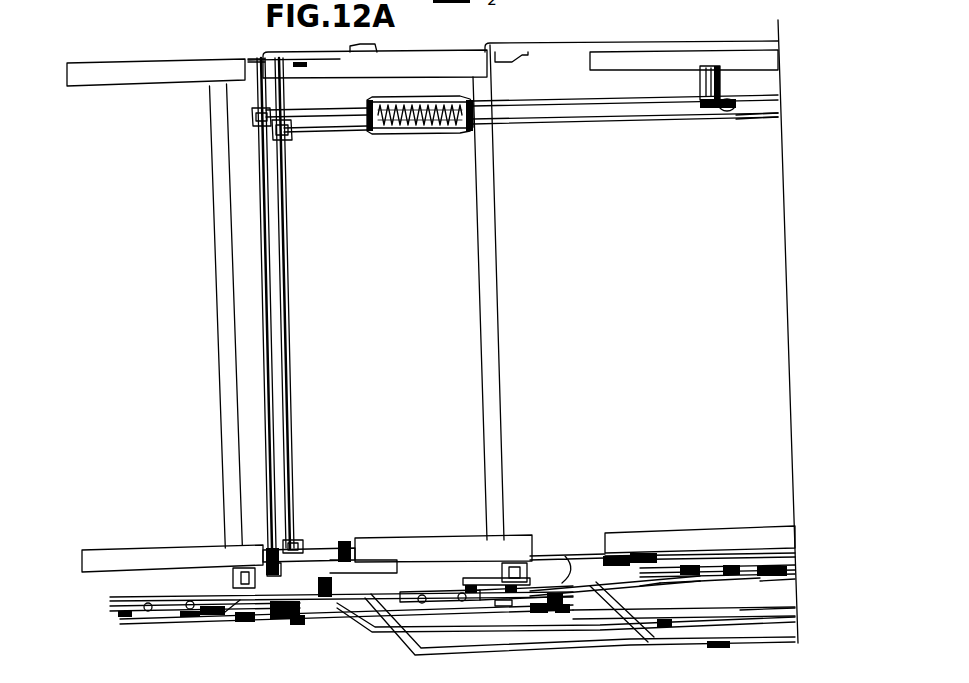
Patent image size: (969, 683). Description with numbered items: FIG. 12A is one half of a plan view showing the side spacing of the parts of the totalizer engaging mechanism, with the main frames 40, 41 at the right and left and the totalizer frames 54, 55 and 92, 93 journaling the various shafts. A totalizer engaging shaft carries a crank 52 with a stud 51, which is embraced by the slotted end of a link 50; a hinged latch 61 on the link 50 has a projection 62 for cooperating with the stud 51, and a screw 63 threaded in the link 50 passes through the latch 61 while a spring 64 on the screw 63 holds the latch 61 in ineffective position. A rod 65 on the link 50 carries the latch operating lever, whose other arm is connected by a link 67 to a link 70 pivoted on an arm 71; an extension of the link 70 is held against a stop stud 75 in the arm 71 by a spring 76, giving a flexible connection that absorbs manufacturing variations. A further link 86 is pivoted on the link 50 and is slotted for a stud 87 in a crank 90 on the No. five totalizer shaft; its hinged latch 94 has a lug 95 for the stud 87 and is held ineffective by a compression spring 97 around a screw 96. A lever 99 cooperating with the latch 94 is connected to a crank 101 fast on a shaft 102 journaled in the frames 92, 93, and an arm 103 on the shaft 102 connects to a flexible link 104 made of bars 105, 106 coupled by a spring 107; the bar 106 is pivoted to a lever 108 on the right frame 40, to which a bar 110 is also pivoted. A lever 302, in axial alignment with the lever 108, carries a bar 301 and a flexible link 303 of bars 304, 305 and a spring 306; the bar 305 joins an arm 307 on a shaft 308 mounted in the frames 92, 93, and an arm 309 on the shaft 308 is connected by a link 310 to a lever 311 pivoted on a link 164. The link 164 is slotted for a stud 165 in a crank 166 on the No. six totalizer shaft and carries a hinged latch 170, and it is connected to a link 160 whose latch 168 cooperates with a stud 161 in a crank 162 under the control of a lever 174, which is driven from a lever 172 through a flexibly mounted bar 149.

The totalizer frame 92 is at (168, 62).
The totalizer frame 54 is at (424, 57).
The main frame 40 is at (684, 48).
The shaft 102 is at (270, 417).
The shaft 308 is at (291, 217).
The arm 103 is at (252, 117).
The arm 307 is at (291, 140).
The bar 105 is at (326, 108).
The bar 305 is at (324, 128).
The flexible link 104 is at (428, 101).
The spring 107 is at (385, 103).
The flexible link 303 is at (428, 131).
The spring 306 is at (398, 130).
The bar 106 is at (529, 101).
The bar 304 is at (582, 119).
The lever 302 is at (699, 96).
The lever 108 is at (729, 97).
The bar 301 is at (719, 117).
The bar 110 is at (768, 118).
The totalizer frame 93 is at (168, 553).
The crank 101 is at (305, 558).
The link 310 is at (335, 572).
The arm 309 is at (344, 541).
The totalizer frame 55 is at (400, 546).
The crank 52 is at (518, 548).
The crank 162 is at (468, 578).
The stud 161 is at (465, 588).
The lever 174 is at (570, 542).
The main frame 41 is at (651, 540).
The link 67 is at (606, 561).
The flexibly mounted bar 149 is at (663, 561).
The lever 172 is at (765, 566).
The arm 71 is at (790, 577).
The stop stud 75 is at (739, 578).
The spring 76 is at (700, 582).
The link 70 is at (650, 585).
The rod 65 is at (607, 586).
The stud 51 is at (524, 584).
The crank 166 is at (222, 583).
The crank 90 is at (256, 590).
The compression spring 97 is at (288, 600).
The stud 165 is at (193, 598).
The hinged latch 170 is at (170, 613).
The hinged latch 94 is at (210, 615).
The lug 95 is at (228, 620).
The screw 96 is at (262, 620).
The stud 87 is at (232, 612).
The lever 99 is at (300, 617).
The lever 311 is at (346, 603).
The latch 168 is at (447, 602).
The hinged latch 61 is at (480, 602).
The projection 62 is at (500, 606).
The screw 63 is at (538, 613).
The spring 64 is at (551, 613).
The link 86 is at (578, 625).
The link 164 is at (588, 645).
The link 50 is at (697, 617).
The link 160 is at (782, 615).